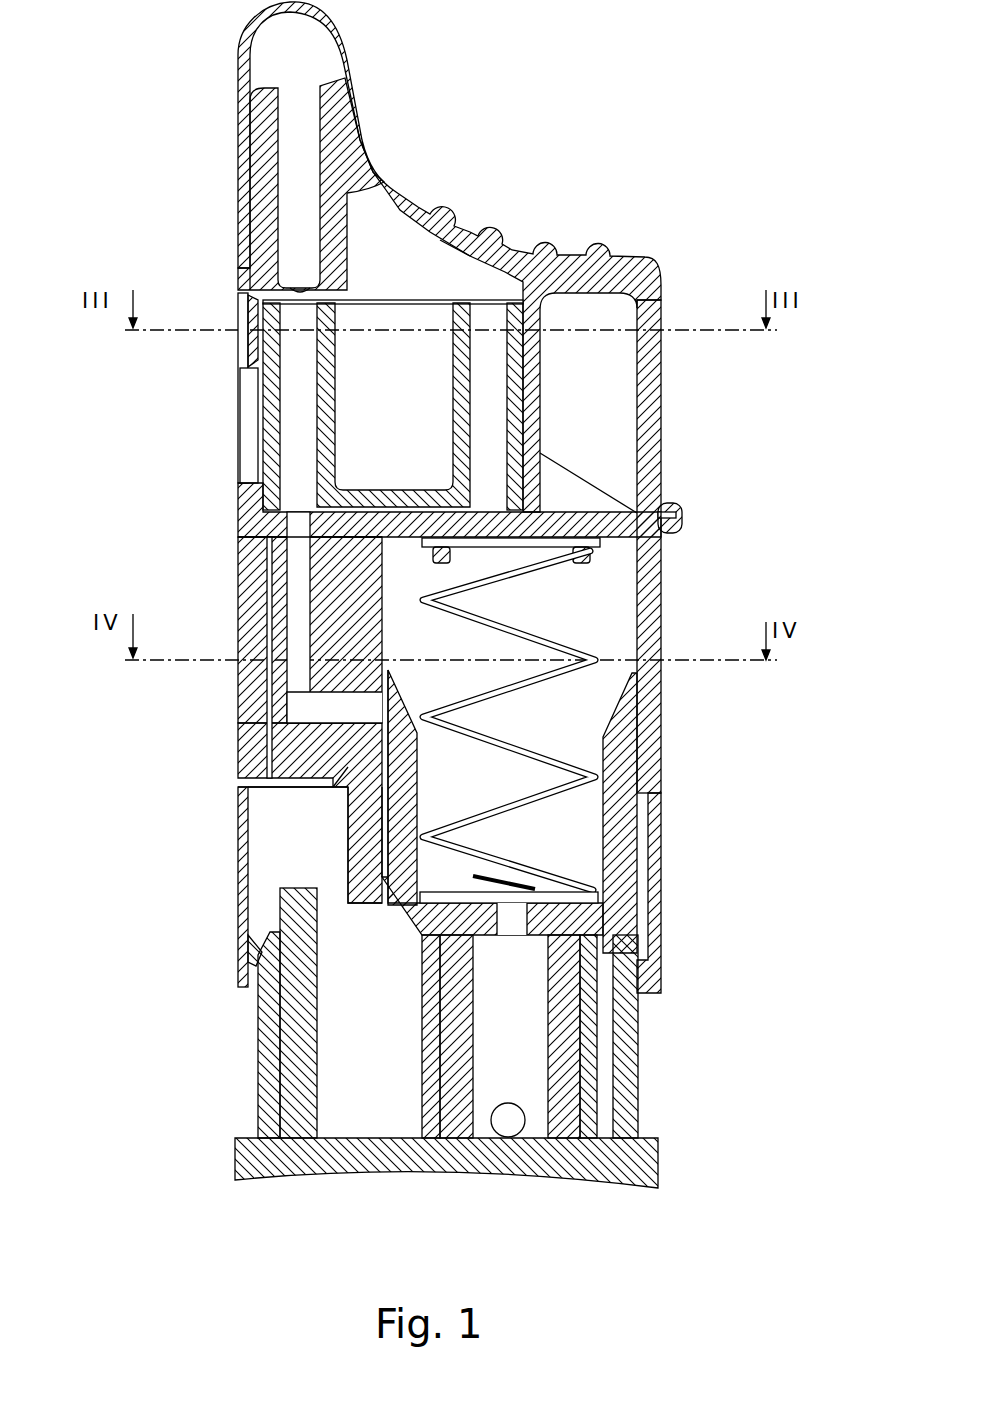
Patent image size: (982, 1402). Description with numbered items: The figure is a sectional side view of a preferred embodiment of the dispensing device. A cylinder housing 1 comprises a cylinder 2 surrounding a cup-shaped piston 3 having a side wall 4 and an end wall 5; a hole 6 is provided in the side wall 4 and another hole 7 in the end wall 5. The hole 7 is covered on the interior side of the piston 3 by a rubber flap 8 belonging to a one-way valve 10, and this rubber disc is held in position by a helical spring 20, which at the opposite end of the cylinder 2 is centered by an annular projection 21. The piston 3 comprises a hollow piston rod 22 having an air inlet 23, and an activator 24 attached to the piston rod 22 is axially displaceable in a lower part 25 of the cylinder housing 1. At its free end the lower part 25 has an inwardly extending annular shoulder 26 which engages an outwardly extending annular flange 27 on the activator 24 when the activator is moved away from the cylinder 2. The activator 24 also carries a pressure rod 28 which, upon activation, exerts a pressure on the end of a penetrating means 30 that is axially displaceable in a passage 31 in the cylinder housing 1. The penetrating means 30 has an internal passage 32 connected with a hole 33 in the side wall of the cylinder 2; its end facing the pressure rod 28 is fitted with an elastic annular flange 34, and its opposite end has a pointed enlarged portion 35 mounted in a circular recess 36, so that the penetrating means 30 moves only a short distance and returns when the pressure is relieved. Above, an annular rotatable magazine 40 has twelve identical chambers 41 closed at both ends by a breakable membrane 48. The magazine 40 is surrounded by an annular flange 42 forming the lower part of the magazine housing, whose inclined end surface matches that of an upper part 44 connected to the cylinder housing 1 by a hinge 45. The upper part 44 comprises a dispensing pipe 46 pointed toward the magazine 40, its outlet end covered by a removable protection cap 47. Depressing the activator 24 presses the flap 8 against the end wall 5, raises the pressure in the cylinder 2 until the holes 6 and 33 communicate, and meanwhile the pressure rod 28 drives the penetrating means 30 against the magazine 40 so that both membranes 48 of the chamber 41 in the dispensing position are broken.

The cylinder housing 1 is at (340, 608).
The cylinder 2 is at (662, 623).
The cup-shaped piston 3 is at (628, 870).
The side wall 4 is at (622, 748).
The end wall 5 is at (593, 918).
The hole 6 is at (395, 862).
The hole 7 is at (512, 915).
The rubber flap 8 is at (497, 878).
The one-way valve 10 is at (506, 912).
The helical spring 20 is at (575, 664).
The annular projection 21 is at (590, 560).
The hollow piston rod 22 is at (555, 1020).
The air inlet 23 is at (512, 1125).
The activator 24 is at (343, 1165).
The lower part 25 is at (661, 843).
The annular shoulder 26 is at (240, 970).
The annular flange 27 is at (258, 942).
The pressure rod 28 is at (280, 900).
The penetrating means 30 is at (273, 690).
The passage 31 is at (265, 631).
The internal passage 32 is at (240, 575).
The hole 33 is at (340, 708).
The elastic annular flange 34 is at (265, 780).
The enlarged portion 35 is at (238, 539).
The circular recess 36 is at (240, 521).
The magazine 40 is at (270, 447).
The chambers 41 is at (292, 402).
The annular flange 42 is at (240, 493).
The upper part 44 is at (463, 243).
The hinge 45 is at (683, 518).
The dispensing pipe 46 is at (258, 218).
The protection cap 47 is at (238, 62).
The breakable membrane 48 is at (483, 305).